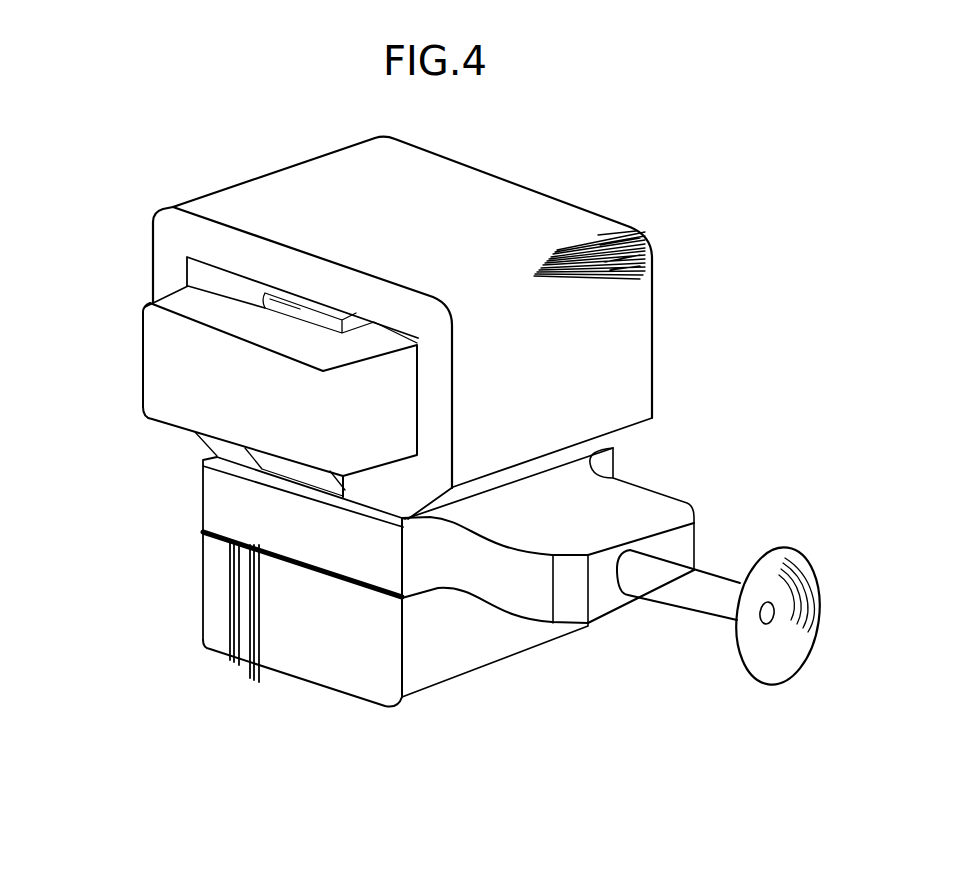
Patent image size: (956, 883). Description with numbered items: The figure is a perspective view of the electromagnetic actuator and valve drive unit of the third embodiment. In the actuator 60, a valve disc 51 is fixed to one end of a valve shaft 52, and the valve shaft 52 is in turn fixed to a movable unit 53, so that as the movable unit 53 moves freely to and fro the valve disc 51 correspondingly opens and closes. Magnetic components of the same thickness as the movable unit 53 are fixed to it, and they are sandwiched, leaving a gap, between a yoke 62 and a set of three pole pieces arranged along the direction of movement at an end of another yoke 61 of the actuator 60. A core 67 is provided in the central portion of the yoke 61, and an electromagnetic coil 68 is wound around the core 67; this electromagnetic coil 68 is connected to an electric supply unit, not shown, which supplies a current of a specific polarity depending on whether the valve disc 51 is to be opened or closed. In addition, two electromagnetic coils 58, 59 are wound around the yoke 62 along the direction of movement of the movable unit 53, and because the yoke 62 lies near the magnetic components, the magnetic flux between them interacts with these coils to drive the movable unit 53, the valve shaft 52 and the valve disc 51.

The actuator 60 is at (542, 156).
The yoke 61 is at (287, 178).
The core 67 is at (222, 277).
The electromagnetic coil 68 is at (155, 351).
The movable unit 53 is at (217, 503).
The yoke 62 is at (457, 650).
The electromagnetic coil 58 is at (183, 727).
The electromagnetic coil 59 is at (293, 727).
The valve shaft 52 is at (703, 597).
The valve disc 51 is at (772, 667).